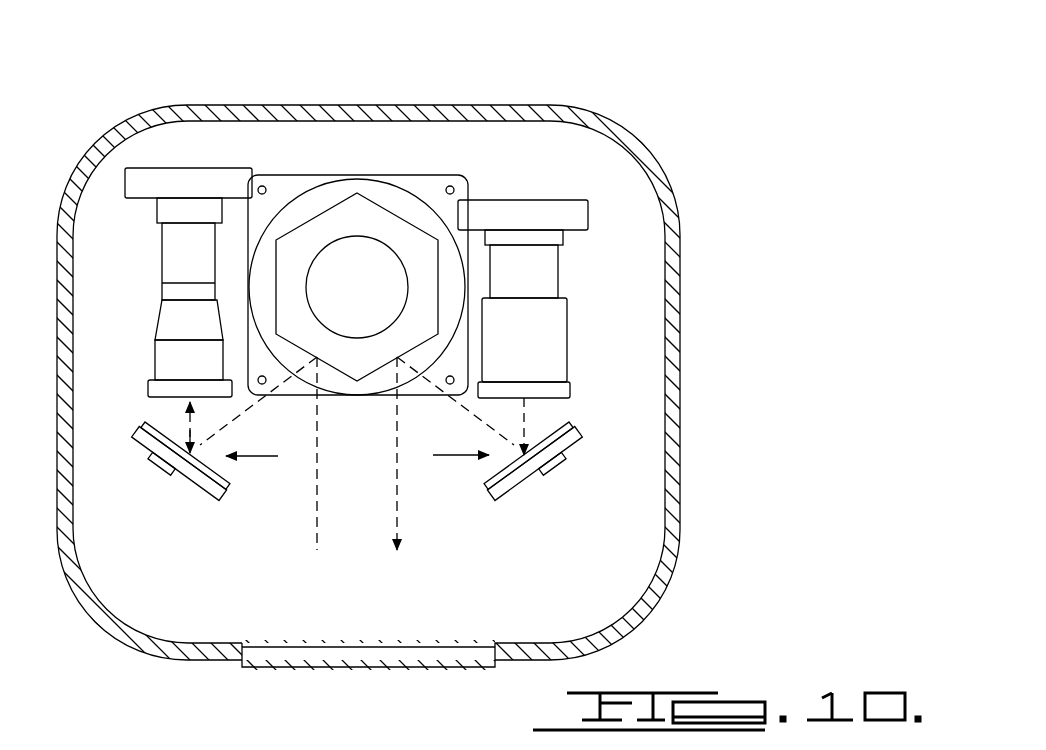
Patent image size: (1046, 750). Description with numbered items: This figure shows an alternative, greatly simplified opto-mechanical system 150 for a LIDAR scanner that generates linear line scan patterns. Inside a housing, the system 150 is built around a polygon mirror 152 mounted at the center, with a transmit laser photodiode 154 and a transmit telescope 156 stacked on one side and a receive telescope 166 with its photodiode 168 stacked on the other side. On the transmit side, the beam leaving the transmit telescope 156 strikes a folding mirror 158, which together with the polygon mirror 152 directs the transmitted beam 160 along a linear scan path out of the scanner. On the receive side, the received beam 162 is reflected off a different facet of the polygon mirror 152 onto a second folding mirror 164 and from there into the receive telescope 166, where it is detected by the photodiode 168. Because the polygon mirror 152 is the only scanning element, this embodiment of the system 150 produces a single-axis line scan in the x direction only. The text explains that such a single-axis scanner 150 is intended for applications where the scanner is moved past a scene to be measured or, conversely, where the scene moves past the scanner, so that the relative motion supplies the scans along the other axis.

The opto-mechanical system 150 is at (642, 137).
The polygon mirror 152 is at (331, 197).
The transmit laser photodiode 154 is at (545, 208).
The transmit telescope 156 is at (571, 346).
The folding mirror 158 is at (562, 427).
The transmitted beam 160 is at (399, 516).
The received beam 162 is at (319, 470).
The folding mirror 164 is at (231, 482).
The receive telescope 166 is at (150, 360).
The photodiode 168 is at (196, 183).